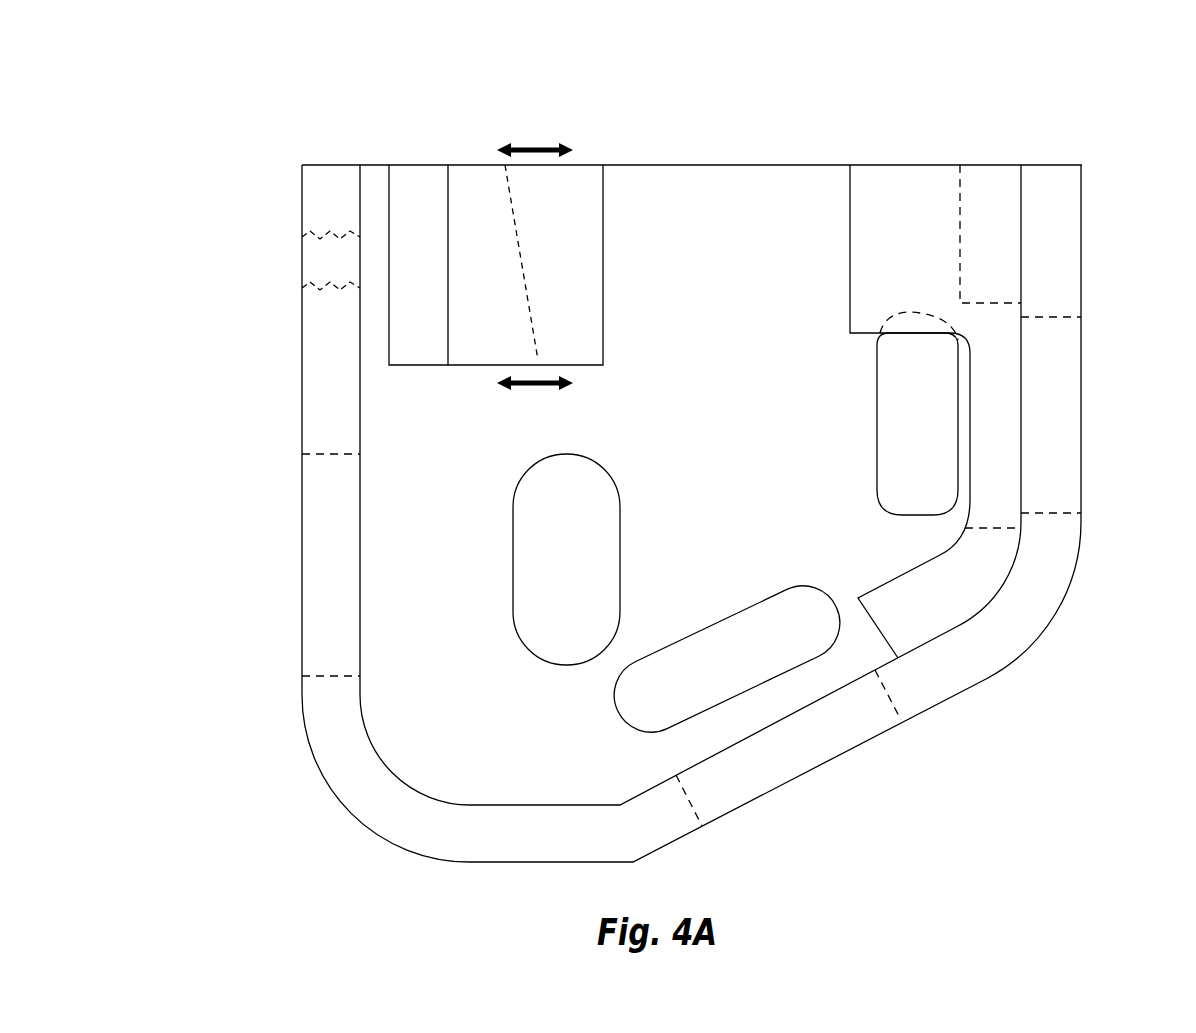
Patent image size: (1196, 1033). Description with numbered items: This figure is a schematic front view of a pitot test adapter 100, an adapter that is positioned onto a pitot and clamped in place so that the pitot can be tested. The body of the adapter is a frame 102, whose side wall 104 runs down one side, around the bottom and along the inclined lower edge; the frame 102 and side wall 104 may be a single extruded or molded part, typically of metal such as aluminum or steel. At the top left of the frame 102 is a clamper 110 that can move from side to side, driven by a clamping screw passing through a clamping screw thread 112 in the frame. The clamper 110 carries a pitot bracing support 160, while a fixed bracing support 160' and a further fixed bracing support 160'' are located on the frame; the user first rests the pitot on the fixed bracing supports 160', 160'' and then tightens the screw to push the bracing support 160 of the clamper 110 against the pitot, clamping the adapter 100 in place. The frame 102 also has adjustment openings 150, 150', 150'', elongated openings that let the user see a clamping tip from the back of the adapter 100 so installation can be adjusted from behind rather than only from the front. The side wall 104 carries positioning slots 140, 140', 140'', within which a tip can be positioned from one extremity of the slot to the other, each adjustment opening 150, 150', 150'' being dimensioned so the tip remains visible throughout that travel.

The pitot test adapter 100 is at (220, 95).
The frame 102 is at (750, 258).
The side wall 104 is at (1060, 238).
The clamper 110 is at (403, 158).
The clamping screw thread 112 is at (318, 263).
The positioning slot 140 is at (1107, 415).
The positioning slot 140' is at (788, 760).
The positioning slot 140'' is at (286, 565).
The adjustment opening 150 is at (917, 413).
The adjustment opening 150' is at (727, 659).
The adjustment opening 150'' is at (566, 559).
The pitot bracing support 160 is at (516, 244).
The fixed bracing support 160' is at (987, 200).
The fixed bracing support 160'' is at (954, 456).